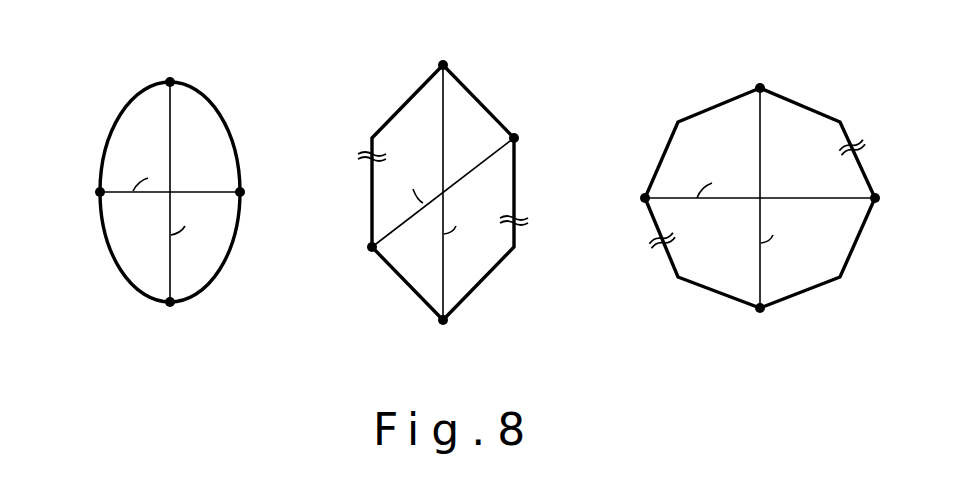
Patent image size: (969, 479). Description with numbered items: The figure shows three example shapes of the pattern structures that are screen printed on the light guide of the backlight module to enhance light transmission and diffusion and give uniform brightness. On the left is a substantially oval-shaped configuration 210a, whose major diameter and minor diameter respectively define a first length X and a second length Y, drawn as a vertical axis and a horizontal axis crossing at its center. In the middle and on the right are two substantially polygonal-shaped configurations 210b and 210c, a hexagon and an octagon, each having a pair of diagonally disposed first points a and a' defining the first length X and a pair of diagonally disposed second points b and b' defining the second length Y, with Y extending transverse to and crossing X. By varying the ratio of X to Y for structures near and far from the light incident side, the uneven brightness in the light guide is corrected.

The oval-shaped configuration 210a is at (124, 258).
The polygonal-shaped configuration 210b is at (406, 281).
The polygonal-shaped configuration 210c is at (676, 262).